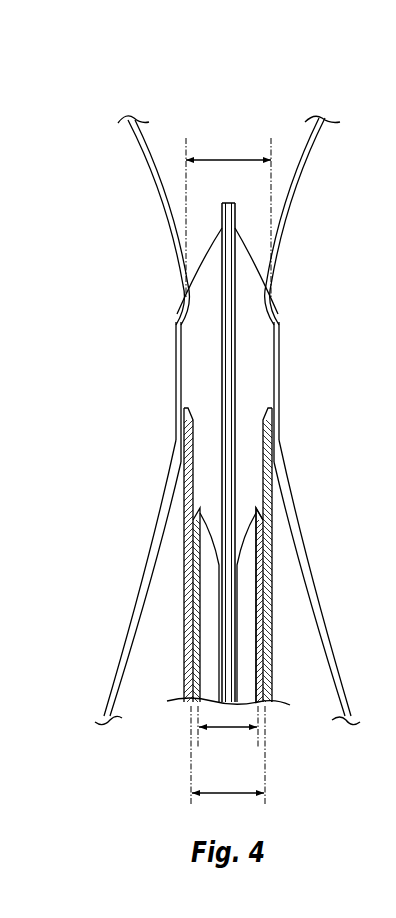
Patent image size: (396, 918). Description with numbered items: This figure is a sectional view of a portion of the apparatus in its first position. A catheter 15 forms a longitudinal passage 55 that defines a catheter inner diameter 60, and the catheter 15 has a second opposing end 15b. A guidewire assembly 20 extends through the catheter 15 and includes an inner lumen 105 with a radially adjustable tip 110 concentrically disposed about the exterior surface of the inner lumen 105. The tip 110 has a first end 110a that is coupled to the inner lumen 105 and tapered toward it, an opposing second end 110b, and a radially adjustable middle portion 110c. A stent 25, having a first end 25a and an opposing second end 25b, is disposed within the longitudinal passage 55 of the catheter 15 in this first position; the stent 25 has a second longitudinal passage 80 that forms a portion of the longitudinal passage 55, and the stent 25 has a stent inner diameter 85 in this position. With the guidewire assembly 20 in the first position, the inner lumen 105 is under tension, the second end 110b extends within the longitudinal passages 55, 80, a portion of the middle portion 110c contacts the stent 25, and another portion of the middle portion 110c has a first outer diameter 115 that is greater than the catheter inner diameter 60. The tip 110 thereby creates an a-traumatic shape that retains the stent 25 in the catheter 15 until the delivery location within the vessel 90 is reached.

The guidewire assembly 20 is at (159, 163).
The vessel 90 is at (293, 243).
The first outer diameter 115 is at (233, 158).
The radially adjustable tip 110 is at (277, 362).
The first end 110a is at (207, 257).
The opposing second end 110b is at (216, 557).
The radially adjustable middle portion 110c is at (180, 396).
The catheter 15 is at (277, 440).
The second opposing end 15b is at (187, 419).
The stent 25 is at (273, 588).
The first end 25a is at (196, 517).
The second end 25b is at (268, 516).
The inner lumen 105 is at (221, 662).
The second longitudinal passage 80 is at (255, 599).
The longitudinal passage 55 is at (255, 677).
The stent inner diameter 85 is at (222, 730).
The catheter inner diameter 60 is at (211, 794).